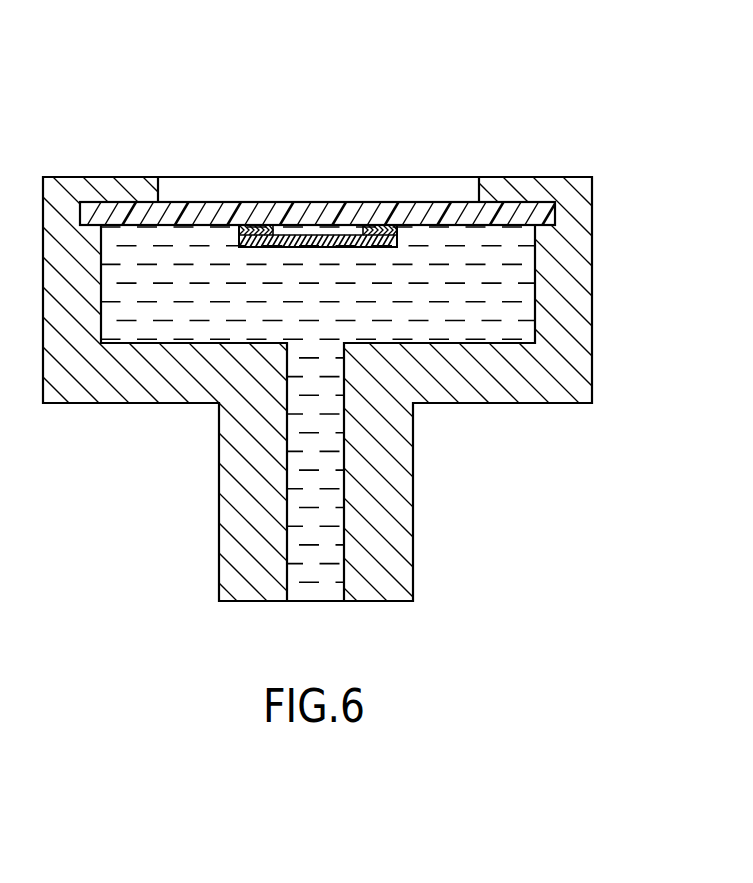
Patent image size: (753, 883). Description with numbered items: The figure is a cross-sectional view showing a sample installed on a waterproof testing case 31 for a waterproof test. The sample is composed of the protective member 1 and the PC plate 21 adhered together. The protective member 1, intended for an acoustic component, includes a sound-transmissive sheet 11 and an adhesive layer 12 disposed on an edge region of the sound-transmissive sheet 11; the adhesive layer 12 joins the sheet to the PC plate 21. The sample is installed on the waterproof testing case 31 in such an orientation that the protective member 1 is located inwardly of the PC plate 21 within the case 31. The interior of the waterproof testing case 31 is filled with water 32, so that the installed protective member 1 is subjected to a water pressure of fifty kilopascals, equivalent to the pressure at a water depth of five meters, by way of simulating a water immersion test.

The protective member 1 is at (318, 137).
The sound-transmissive sheet 11 is at (318, 233).
The adhesive layer 12 is at (372, 226).
The PC plate 21 is at (443, 214).
The waterproof testing case 31 is at (565, 262).
The water 32 is at (500, 312).